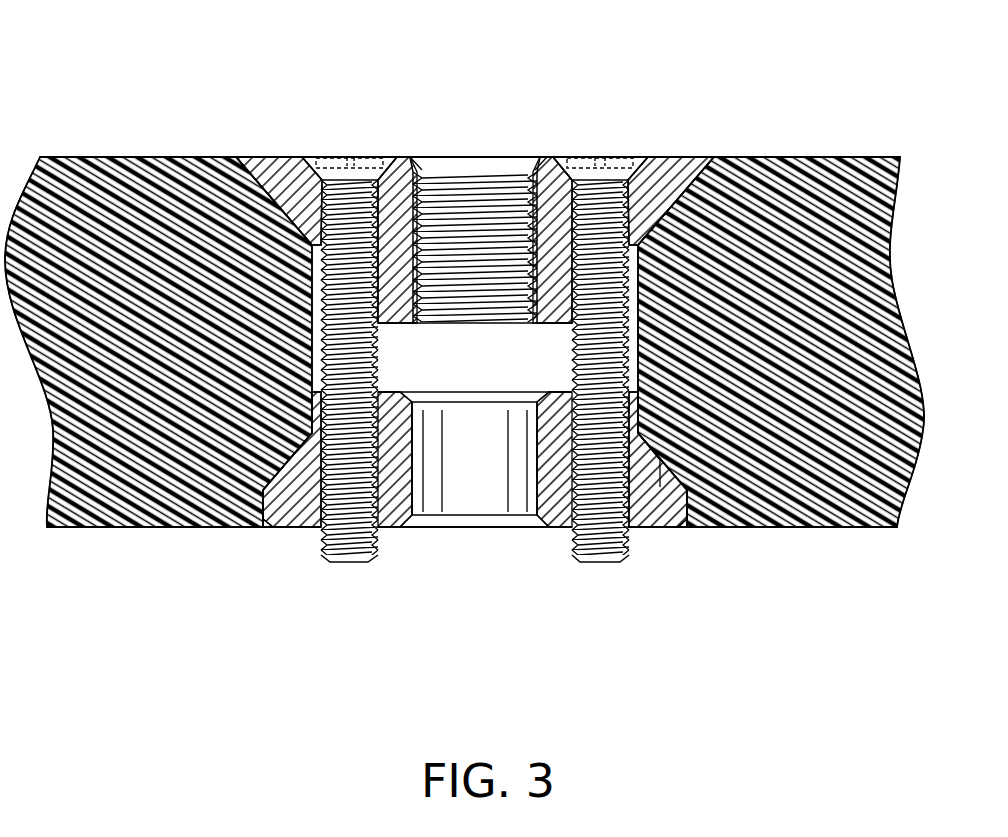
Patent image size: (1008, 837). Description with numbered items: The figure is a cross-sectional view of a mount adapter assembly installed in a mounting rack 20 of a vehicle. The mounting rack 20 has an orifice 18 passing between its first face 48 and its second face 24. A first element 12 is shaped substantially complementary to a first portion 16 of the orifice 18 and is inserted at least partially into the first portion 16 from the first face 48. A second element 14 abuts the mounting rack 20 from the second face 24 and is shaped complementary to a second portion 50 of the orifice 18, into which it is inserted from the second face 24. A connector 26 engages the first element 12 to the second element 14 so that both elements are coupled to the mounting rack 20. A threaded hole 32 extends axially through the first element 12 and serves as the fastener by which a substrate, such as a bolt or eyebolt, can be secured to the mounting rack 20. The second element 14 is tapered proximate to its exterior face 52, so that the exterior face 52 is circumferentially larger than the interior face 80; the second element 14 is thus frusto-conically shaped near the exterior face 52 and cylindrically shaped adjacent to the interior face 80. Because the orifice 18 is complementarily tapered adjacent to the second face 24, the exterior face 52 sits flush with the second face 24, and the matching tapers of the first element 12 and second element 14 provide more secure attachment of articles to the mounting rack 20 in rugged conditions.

The first element 12 is at (666, 173).
The second element 14 is at (665, 527).
The first portion 16 is at (552, 247).
The orifice 18 is at (400, 238).
The mounting rack 20 is at (838, 190).
The second face 24 is at (151, 527).
The connector 26 is at (347, 492).
The threaded hole 32 is at (481, 200).
The first face 48 is at (172, 157).
The second portion 50 is at (553, 443).
The exterior face 52 is at (303, 527).
The interior face 80 is at (660, 487).